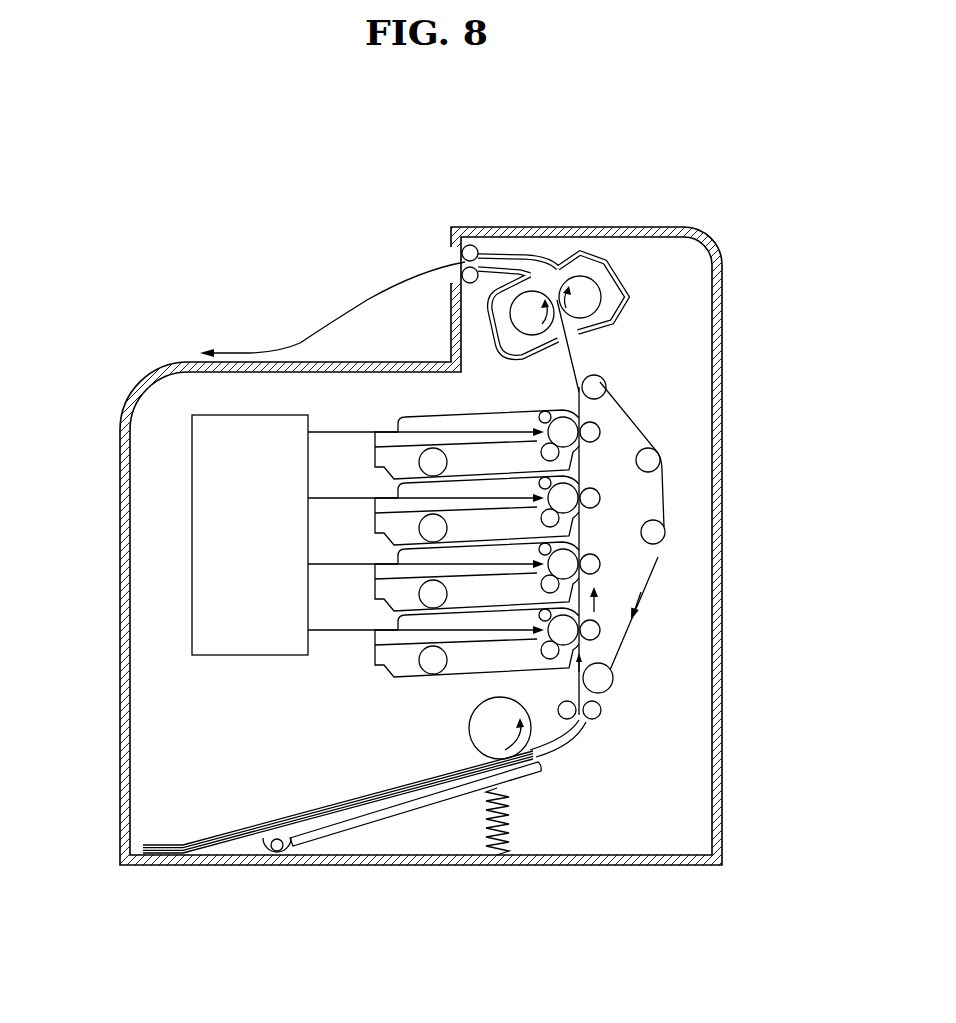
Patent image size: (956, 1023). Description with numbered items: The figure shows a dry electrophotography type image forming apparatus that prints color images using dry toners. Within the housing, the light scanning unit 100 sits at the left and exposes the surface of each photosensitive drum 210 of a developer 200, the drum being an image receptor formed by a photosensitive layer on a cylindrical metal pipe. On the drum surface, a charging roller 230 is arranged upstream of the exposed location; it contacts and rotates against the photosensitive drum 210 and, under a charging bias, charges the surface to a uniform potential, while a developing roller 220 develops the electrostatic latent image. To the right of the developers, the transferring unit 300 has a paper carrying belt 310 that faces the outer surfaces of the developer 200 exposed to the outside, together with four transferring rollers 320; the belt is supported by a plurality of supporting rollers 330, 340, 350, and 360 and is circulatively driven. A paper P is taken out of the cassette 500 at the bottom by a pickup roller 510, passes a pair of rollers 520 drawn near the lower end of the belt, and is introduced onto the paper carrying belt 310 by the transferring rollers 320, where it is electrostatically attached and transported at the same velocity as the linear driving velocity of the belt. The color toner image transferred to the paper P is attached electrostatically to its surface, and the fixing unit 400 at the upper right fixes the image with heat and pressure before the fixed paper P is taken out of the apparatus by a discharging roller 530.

The light scanning unit 100 is at (178, 543).
The developer 200 is at (496, 404).
The photosensitive drum 210 is at (562, 425).
The developing roller 220 is at (543, 419).
The charging roller 230 is at (546, 451).
The transferring unit 300 is at (674, 507).
The paper carrying belt 310 is at (637, 423).
The transferring rollers 320 is at (608, 634).
The supporting roller 330 is at (600, 680).
The supporting roller 340 is at (595, 387).
The supporting roller 350 is at (653, 532).
The supporting roller 360 is at (648, 460).
The fixing unit 400 is at (650, 295).
The cassette 500 is at (212, 814).
The pickup roller 510 is at (500, 728).
The feed rollers 520 is at (567, 710).
The discharging roller 530 is at (471, 249).
The paper P is at (360, 800).